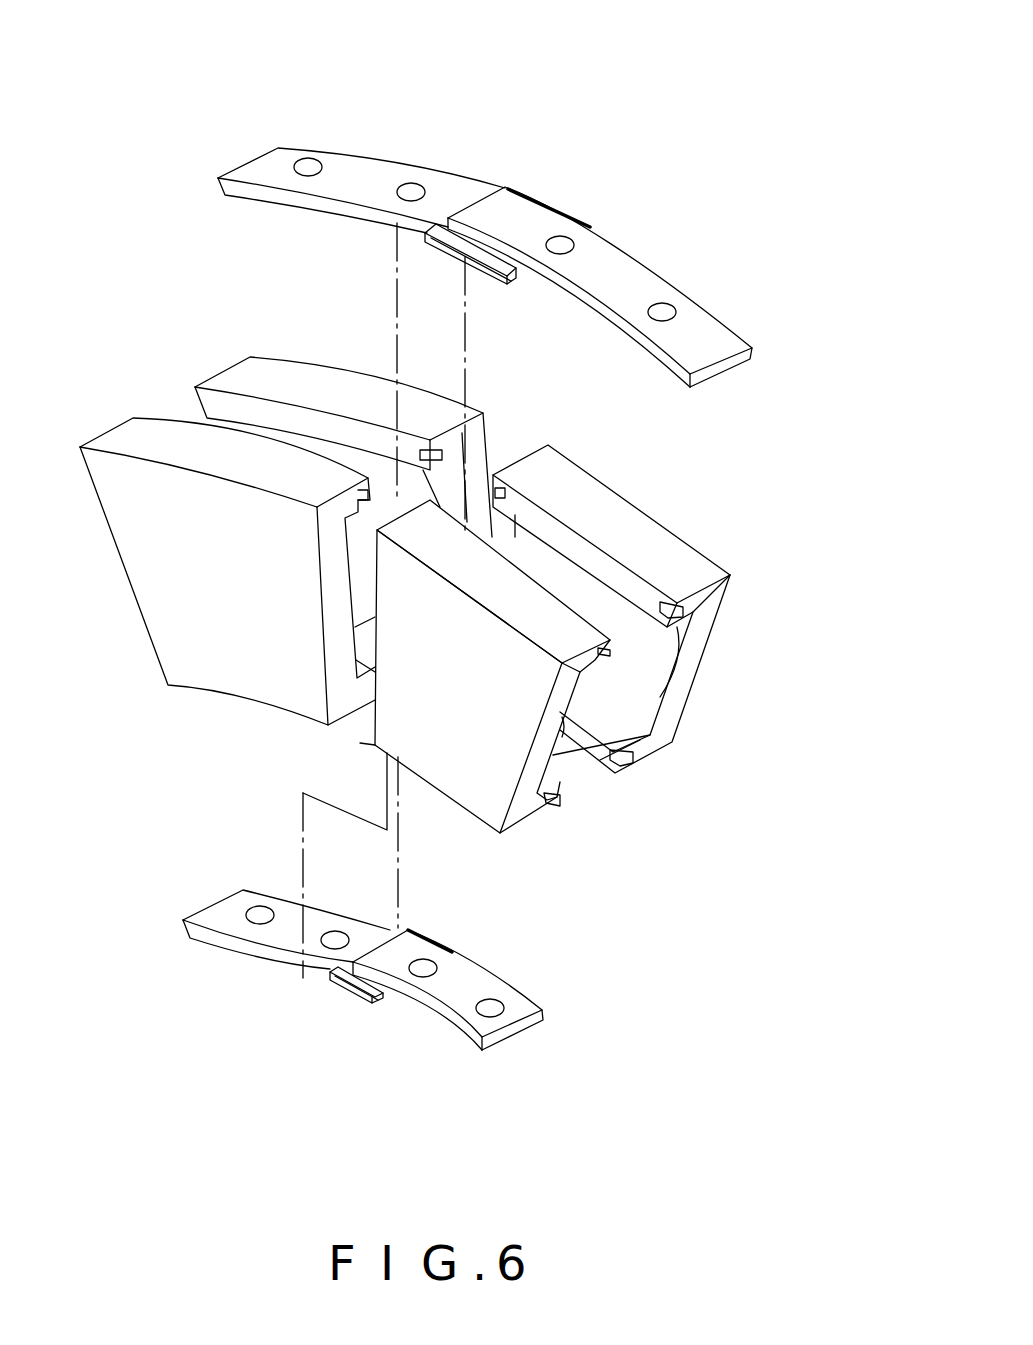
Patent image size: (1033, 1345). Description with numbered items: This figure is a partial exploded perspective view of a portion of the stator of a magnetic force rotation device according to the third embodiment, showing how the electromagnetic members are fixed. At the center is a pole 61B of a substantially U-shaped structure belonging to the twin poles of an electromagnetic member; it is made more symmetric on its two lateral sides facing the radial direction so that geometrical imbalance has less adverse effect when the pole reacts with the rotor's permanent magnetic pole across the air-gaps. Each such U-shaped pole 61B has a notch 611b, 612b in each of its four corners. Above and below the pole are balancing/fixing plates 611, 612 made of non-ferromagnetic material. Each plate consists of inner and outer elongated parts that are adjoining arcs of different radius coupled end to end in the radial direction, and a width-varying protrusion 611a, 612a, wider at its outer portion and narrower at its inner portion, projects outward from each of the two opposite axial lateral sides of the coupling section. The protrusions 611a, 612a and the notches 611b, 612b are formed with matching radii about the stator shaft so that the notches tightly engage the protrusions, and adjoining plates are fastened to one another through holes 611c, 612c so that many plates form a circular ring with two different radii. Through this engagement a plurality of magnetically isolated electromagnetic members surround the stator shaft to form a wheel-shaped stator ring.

The balancing/fixing plate 611 is at (557, 190).
The protrusion 611a is at (457, 250).
The notch 611b is at (498, 480).
The hole 611c is at (410, 190).
The pole 61B is at (520, 592).
The balancing/fixing plate 612 is at (492, 942).
The protrusion 612a is at (355, 990).
The notch 612b is at (630, 760).
The hole 612c is at (490, 1008).